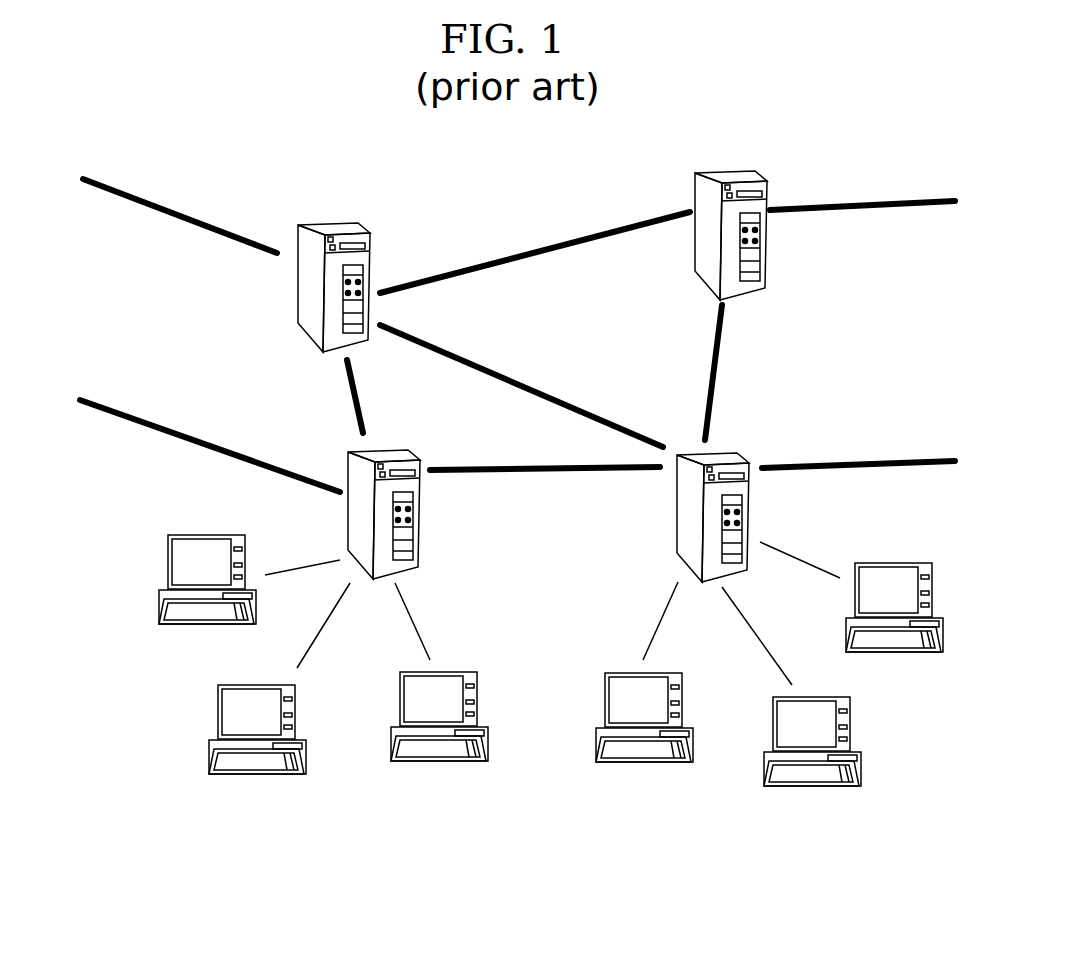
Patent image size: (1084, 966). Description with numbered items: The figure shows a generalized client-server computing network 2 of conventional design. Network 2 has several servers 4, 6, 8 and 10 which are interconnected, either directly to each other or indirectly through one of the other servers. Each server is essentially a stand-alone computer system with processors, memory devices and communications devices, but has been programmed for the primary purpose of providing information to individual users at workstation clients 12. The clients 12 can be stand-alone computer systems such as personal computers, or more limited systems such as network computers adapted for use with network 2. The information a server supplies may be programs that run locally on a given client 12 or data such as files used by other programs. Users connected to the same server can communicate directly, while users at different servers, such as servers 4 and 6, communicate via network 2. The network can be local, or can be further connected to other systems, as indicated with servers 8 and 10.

The client-server computing network 2 is at (148, 741).
The server 4 is at (415, 519).
The server 6 is at (680, 497).
The server 8 is at (315, 300).
The server 10 is at (723, 178).
The workstation client 12 is at (432, 762).